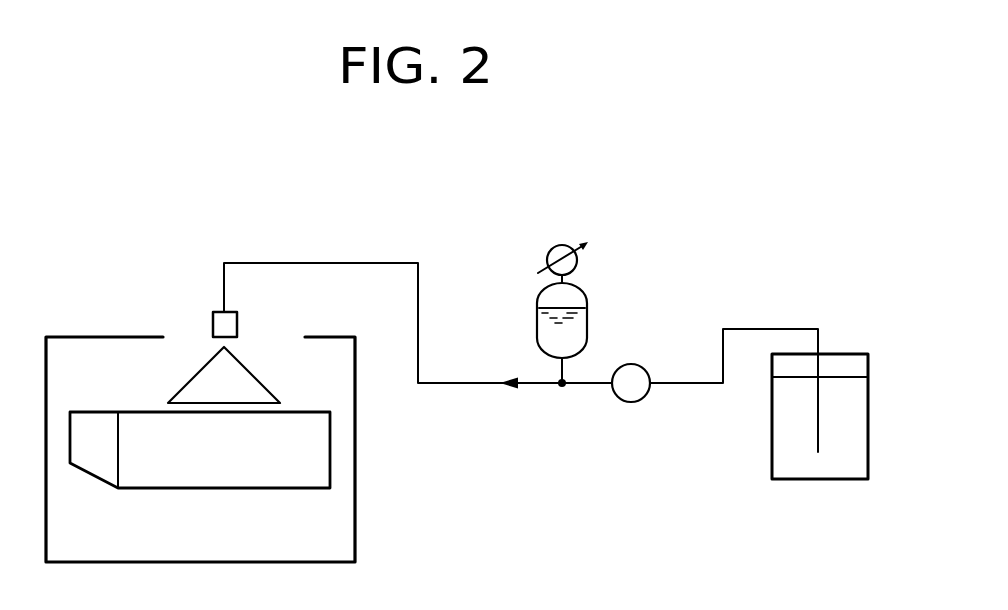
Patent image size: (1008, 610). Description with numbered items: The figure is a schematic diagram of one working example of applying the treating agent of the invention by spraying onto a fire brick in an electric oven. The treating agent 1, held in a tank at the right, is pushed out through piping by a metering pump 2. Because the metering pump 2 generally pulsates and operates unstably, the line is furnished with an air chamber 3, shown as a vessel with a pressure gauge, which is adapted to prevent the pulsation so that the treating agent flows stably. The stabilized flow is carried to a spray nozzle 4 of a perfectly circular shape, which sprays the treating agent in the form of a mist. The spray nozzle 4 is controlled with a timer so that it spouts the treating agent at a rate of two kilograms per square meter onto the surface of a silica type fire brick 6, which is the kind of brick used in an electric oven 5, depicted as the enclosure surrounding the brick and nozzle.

The treating agent 1 is at (798, 465).
The metering pump 2 is at (637, 400).
The air chamber 3 is at (583, 288).
The spray nozzle 4 is at (237, 325).
The electric oven 5 is at (357, 528).
The silica type fire brick 6 is at (320, 457).